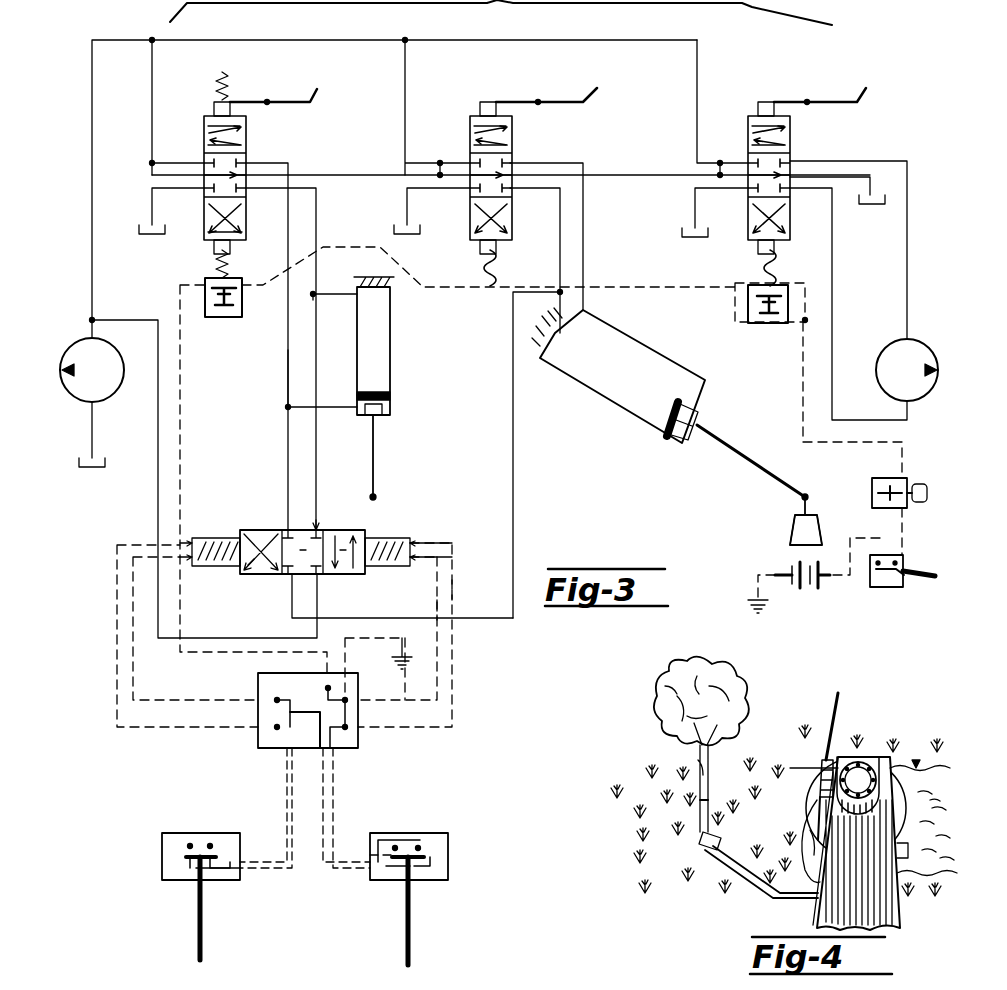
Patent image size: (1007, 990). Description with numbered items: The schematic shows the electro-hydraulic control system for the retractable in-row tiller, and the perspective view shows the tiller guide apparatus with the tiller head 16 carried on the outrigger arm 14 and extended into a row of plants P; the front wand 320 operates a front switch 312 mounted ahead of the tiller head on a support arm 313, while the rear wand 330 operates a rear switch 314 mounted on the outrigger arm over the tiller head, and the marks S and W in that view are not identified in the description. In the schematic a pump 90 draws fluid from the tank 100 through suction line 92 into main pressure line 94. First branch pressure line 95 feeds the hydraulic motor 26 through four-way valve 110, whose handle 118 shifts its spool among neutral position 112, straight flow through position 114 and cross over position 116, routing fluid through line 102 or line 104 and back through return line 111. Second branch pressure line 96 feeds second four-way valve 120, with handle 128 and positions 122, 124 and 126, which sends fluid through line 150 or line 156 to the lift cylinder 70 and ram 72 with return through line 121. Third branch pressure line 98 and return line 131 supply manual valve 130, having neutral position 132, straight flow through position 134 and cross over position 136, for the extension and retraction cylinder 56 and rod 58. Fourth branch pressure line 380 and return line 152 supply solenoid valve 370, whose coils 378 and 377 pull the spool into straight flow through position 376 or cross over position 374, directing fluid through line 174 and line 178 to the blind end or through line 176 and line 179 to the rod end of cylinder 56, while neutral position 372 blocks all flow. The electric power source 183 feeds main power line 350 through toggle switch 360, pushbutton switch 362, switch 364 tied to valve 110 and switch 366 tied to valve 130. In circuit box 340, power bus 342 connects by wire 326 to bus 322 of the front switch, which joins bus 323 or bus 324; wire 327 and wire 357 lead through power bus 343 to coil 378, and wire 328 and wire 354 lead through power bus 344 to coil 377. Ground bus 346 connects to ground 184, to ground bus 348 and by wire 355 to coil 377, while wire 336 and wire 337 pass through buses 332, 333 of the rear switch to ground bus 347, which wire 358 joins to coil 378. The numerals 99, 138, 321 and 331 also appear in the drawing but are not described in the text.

In FIG. 3, the outrigger arm 14 is at (792, 537).
In FIG. 4, the outrigger arm 14 is at (900, 919).
In FIG. 3, the tiller head 16 is at (806, 530).
In FIG. 4, the tiller head 16 is at (872, 762).
In FIG. 3, the hydraulic motor 26 is at (910, 340).
In FIG. 3, the extension and retraction cylinder 56 is at (390, 357).
In FIG. 3, the rod 58 is at (373, 447).
In FIG. 3, the lift cylinder 70 is at (624, 405).
In FIG. 3, the ram 72 is at (723, 448).
In FIG. 3, the pump 90 is at (113, 393).
In FIG. 3, the suction line 92 is at (95, 425).
In FIG. 3, the main pressure line 94 is at (92, 97).
In FIG. 3, the first branch pressure line 95 is at (697, 78).
In FIG. 3, the second branch pressure line 96 is at (405, 78).
In FIG. 3, the third branch pressure line 98 is at (152, 102).
In FIG. 3, the return line 99 is at (386, 178).
In FIG. 3, the tank 100 is at (95, 470).
In FIG. 3, the line 102 is at (907, 272).
In FIG. 3, the line 104 is at (832, 272).
In FIG. 3, the four-way valve 110 is at (777, 94).
In FIG. 3, the return line 111 is at (690, 226).
In FIG. 3, the center spool position 112 is at (790, 160).
In FIG. 3, the spool position 114 is at (790, 128).
In FIG. 3, the spool position 116 is at (792, 222).
In FIG. 3, the handle 118 is at (857, 100).
In FIG. 3, the second four-way valve 120 is at (494, 94).
In FIG. 3, the return line 121 is at (407, 212).
In FIG. 3, the center spool position 122 is at (512, 160).
In FIG. 3, the spool position 124 is at (512, 128).
In FIG. 3, the spool position 126 is at (512, 222).
In FIG. 3, the handle 128 is at (583, 100).
In FIG. 3, the valve 130 is at (211, 94).
In FIG. 3, the return line 131 is at (152, 212).
In FIG. 3, the neutral position 132 is at (246, 160).
In FIG. 3, the straight flow through position 134 is at (246, 128).
In FIG. 3, the cross over position 136 is at (246, 222).
In FIG. 3, the manual lever 138 is at (267, 100).
In FIG. 3, the line 150 is at (637, 343).
In FIG. 3, the return line 152 is at (513, 487).
In FIG. 3, the line 156 is at (560, 313).
In FIG. 3, the line 174 is at (313, 267).
In FIG. 3, the line 176 is at (288, 361).
In FIG. 3, the line 178 is at (342, 295).
In FIG. 3, the line 179 is at (358, 396).
In FIG. 3, the electric power source 183 is at (792, 574).
In FIG. 3, the ground 184 is at (758, 600).
In FIG. 3, the front switch 312 is at (448, 880).
In FIG. 4, the front switch 312 is at (719, 841).
In FIG. 4, the support arm 313 is at (740, 872).
In FIG. 3, the rear switch 314 is at (162, 874).
In FIG. 4, the rear switch 314 is at (822, 770).
In FIG. 3, the front wand 320 is at (412, 937).
In FIG. 4, the front wand 320 is at (708, 802).
In FIG. 3, the switch contact 321 is at (448, 850).
In FIG. 3, the bus 322 is at (384, 880).
In FIG. 3, the bus 323 is at (406, 880).
In FIG. 3, the bus 324 is at (424, 840).
In FIG. 3, the wire 326 is at (333, 814).
In FIG. 3, the wire 327 is at (328, 792).
In FIG. 3, the wire 328 is at (335, 767).
In FIG. 3, the rear wand 330 is at (197, 932).
In FIG. 4, the rear wand 330 is at (832, 717).
In FIG. 3, the switch contact 331 is at (200, 838).
In FIG. 3, the ground bus 332 is at (232, 880).
In FIG. 3, the ground bus 333 is at (240, 858).
In FIG. 3, the wire 336 is at (292, 814).
In FIG. 3, the wire 337 is at (287, 792).
In FIG. 3, the circuit box 340 is at (258, 690).
In FIG. 3, the power bus 342 is at (358, 717).
In FIG. 3, the power bus 343 is at (300, 748).
In FIG. 3, the power bus 344 is at (360, 735).
In FIG. 3, the ground bus 346 is at (358, 692).
In FIG. 3, the ground bus 347 is at (283, 735).
In FIG. 3, the ground bus 348 is at (300, 690).
In FIG. 3, the main power line 350 is at (182, 410).
In FIG. 3, the wire 354 is at (448, 612).
In FIG. 3, the wire 355 is at (445, 587).
In FIG. 3, the wire 357 is at (133, 681).
In FIG. 3, the wire 358 is at (117, 656).
In FIG. 3, the toggle switch 360 is at (900, 587).
In FIG. 3, the pushbutton switch 362 is at (888, 478).
In FIG. 3, the third switch 364 is at (778, 323).
In FIG. 3, the fourth switch 366 is at (222, 317).
In FIG. 3, the solenoid valve 370 is at (316, 520).
In FIG. 3, the neutral position 372 is at (290, 576).
In FIG. 3, the cross over position 374 is at (252, 572).
In FIG. 3, the straight flow through position 376 is at (343, 574).
In FIG. 3, the coil 377 is at (383, 538).
In FIG. 3, the coil 378 is at (198, 538).
In FIG. 3, the fourth branch pressure line 380 is at (158, 514).
In FIG. 4, the plants P is at (748, 703).
In FIG. 4, the water surface S is at (917, 762).
In FIG. 4, the weeds W is at (617, 802).